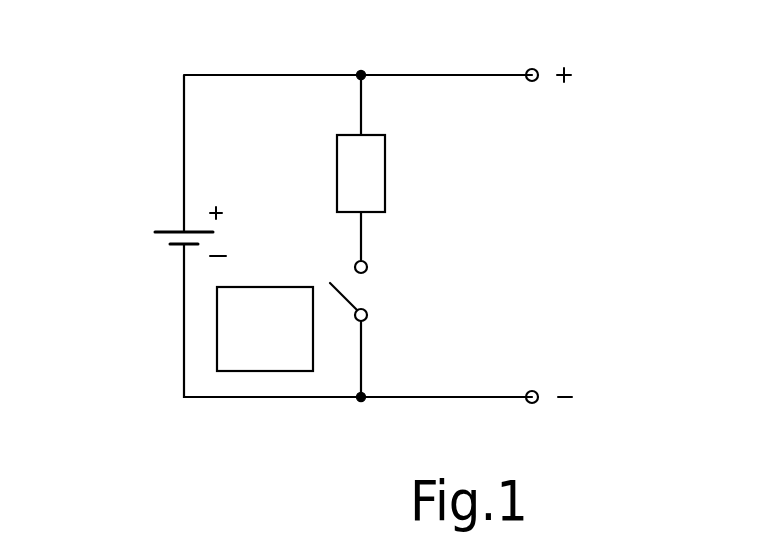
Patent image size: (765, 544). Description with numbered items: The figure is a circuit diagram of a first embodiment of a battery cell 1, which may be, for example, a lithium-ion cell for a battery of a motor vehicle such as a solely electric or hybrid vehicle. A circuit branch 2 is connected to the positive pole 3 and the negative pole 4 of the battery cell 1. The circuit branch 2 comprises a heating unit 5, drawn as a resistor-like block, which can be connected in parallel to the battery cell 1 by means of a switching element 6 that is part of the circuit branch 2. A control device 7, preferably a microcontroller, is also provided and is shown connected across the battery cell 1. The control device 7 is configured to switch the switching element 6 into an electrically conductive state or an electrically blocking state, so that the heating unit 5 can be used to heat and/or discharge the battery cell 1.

The battery cell 1 is at (142, 248).
The circuit branch 2 is at (447, 255).
The positive pole 3 is at (552, 89).
The negative pole 4 is at (553, 405).
The heating unit 5 is at (361, 173).
The switching element 6 is at (382, 295).
The control device 7 is at (265, 329).